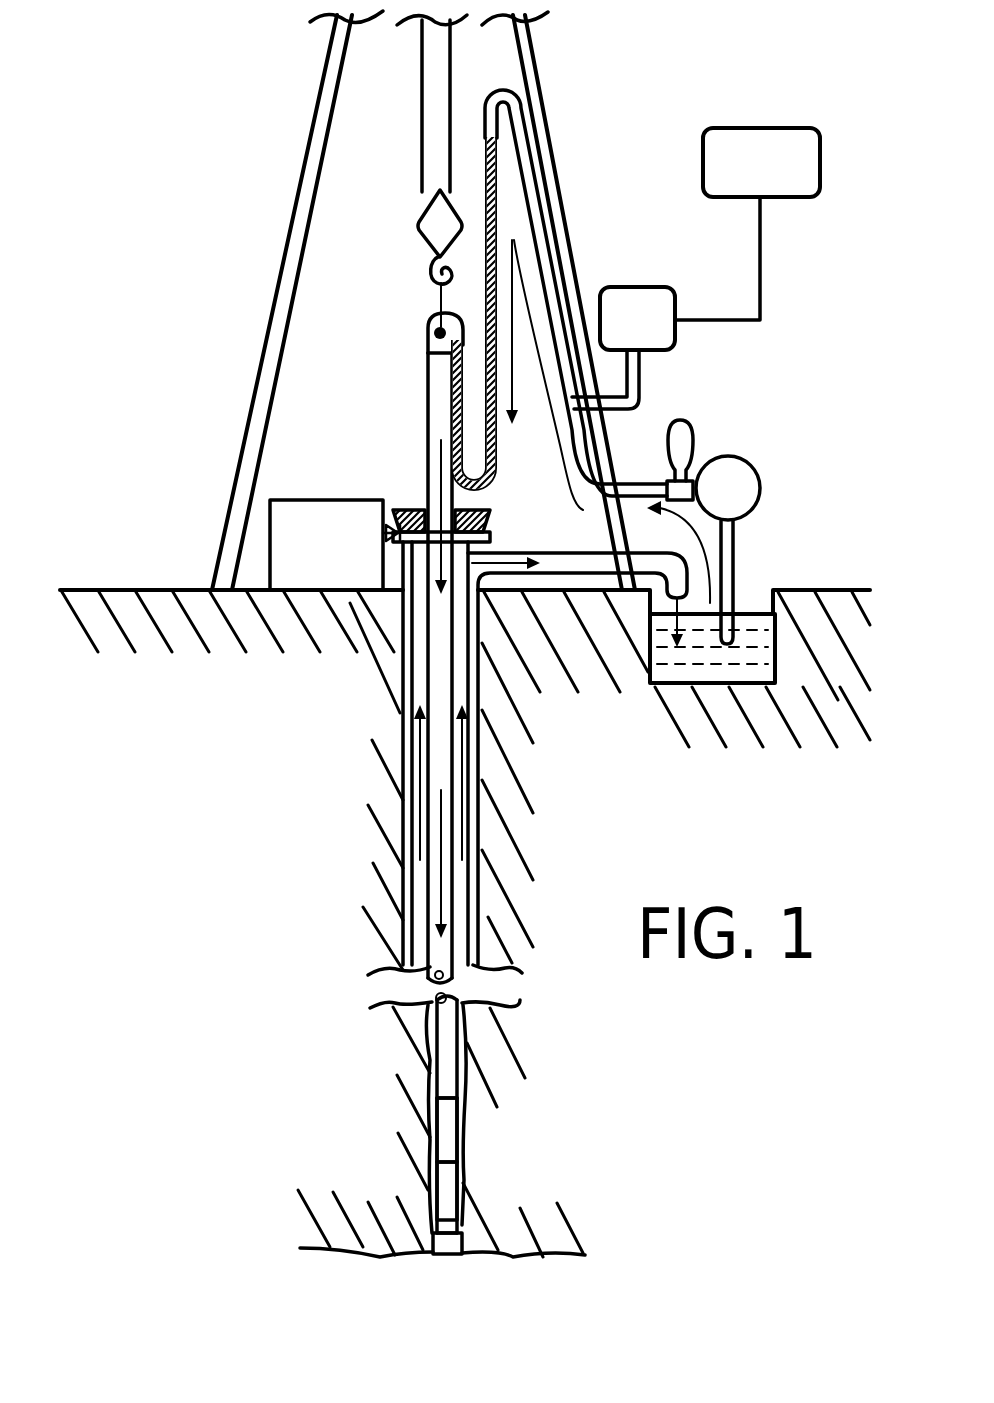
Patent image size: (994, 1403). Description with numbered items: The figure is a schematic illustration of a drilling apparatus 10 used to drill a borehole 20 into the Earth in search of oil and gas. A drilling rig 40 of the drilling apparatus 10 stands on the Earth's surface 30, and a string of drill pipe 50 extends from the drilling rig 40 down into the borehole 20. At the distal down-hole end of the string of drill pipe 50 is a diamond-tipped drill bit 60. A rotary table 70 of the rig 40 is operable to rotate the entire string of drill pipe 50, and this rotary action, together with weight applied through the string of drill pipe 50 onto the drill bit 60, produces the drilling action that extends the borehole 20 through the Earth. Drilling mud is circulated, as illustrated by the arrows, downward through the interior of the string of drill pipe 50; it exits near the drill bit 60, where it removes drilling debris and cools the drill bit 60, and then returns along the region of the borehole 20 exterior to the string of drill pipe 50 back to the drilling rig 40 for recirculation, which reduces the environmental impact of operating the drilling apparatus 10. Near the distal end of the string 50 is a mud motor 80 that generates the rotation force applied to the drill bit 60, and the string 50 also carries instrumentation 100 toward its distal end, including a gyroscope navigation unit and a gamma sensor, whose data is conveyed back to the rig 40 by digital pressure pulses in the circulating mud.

The drilling apparatus 10 is at (124, 171).
The borehole 20 is at (470, 1143).
The Earth's surface 30 is at (152, 590).
The drilling rig 40 is at (328, 90).
The string of drill pipe 50 is at (432, 420).
The drill bit 60 is at (447, 1252).
The rotary table 70 is at (410, 510).
The mud motor 80 is at (445, 1200).
The instrumentation 100 is at (445, 1147).